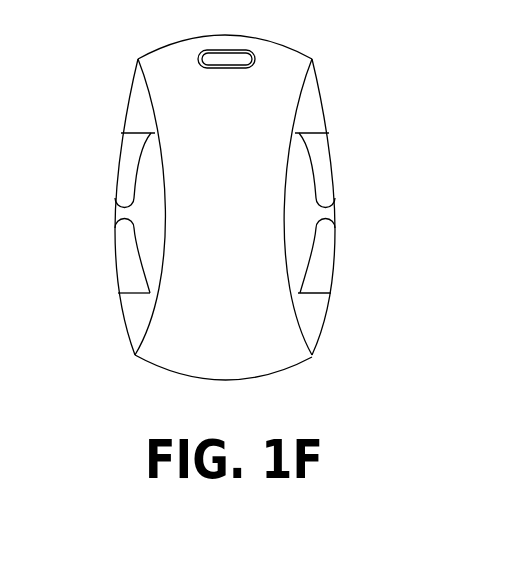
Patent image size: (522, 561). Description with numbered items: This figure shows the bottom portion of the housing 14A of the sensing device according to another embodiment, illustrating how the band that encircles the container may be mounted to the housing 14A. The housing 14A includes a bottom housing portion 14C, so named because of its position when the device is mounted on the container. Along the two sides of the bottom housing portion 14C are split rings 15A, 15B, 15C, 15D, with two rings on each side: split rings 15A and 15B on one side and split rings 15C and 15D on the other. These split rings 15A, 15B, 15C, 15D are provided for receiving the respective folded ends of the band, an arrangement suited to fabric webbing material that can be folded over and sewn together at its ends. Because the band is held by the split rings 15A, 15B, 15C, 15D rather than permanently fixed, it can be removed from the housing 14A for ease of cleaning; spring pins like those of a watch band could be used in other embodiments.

The housing 14A is at (282, 44).
The bottom housing portion 14C is at (263, 290).
The split ring 15A is at (335, 153).
The split ring 15B is at (335, 257).
The split ring 15C is at (115, 177).
The split ring 15D is at (114, 263).